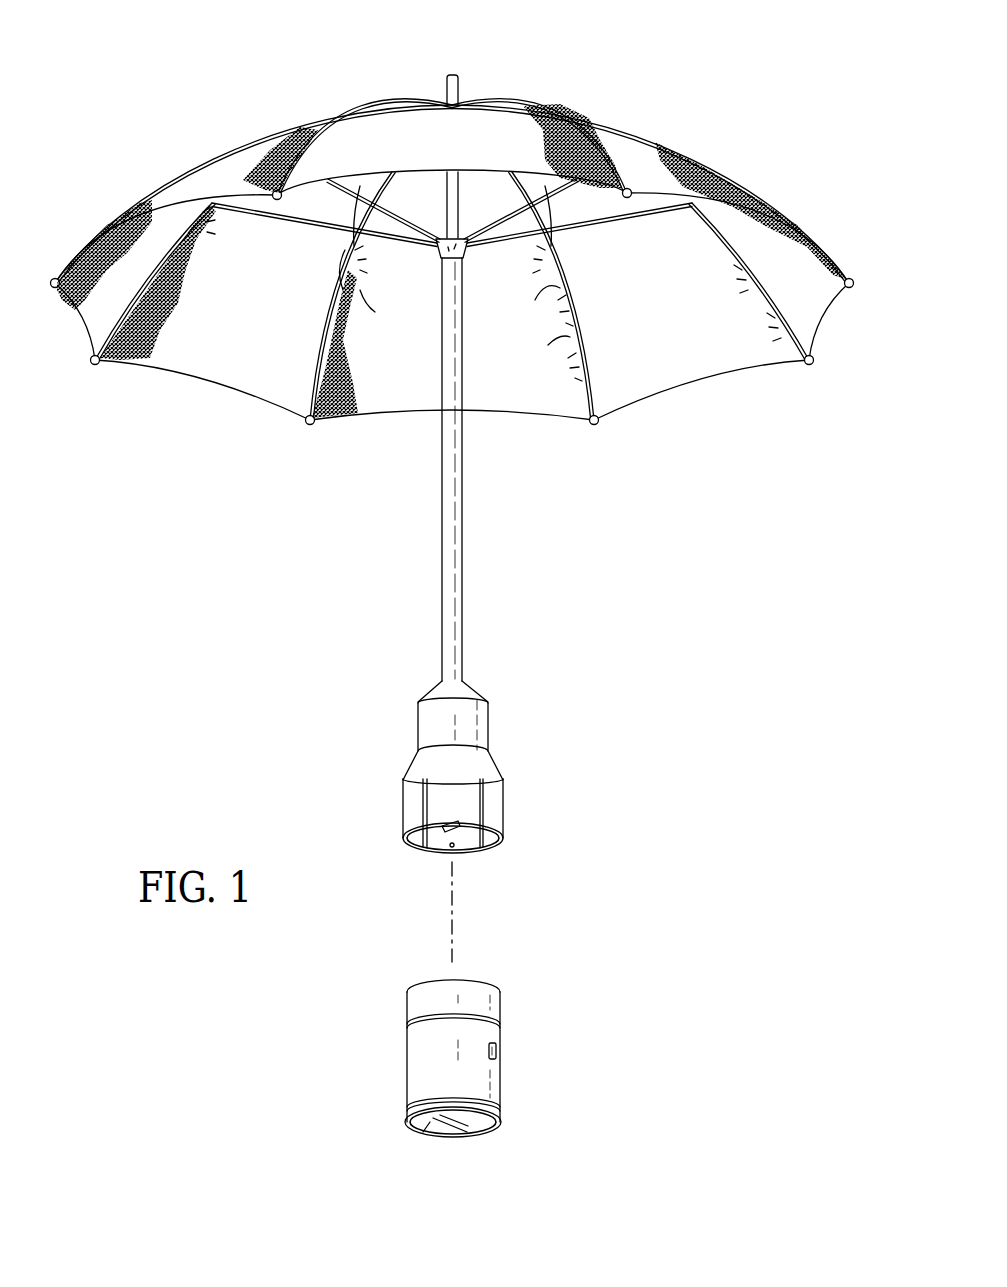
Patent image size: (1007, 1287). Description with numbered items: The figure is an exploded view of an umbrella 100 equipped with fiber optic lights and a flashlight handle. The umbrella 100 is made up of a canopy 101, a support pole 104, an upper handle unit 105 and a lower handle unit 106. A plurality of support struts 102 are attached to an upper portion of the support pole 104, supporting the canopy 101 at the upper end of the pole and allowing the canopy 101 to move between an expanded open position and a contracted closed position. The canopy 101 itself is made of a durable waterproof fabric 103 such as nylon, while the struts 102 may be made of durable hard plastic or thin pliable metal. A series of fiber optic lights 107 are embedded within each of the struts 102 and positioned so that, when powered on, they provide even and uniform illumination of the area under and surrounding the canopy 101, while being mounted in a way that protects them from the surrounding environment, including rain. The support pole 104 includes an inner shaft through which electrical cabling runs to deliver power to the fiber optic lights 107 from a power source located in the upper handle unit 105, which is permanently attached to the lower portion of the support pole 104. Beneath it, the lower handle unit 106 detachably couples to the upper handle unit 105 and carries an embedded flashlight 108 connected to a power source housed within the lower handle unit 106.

The umbrella 100 is at (647, 96).
The canopy 101 is at (773, 207).
The support struts 102 is at (273, 144).
The waterproof fabric 103 is at (712, 170).
The support pole 104 is at (463, 578).
The upper handle unit 105 is at (527, 758).
The lower handle unit 106 is at (542, 1044).
The fiber optic lights 107 is at (172, 312).
The flashlight 108 is at (415, 1135).